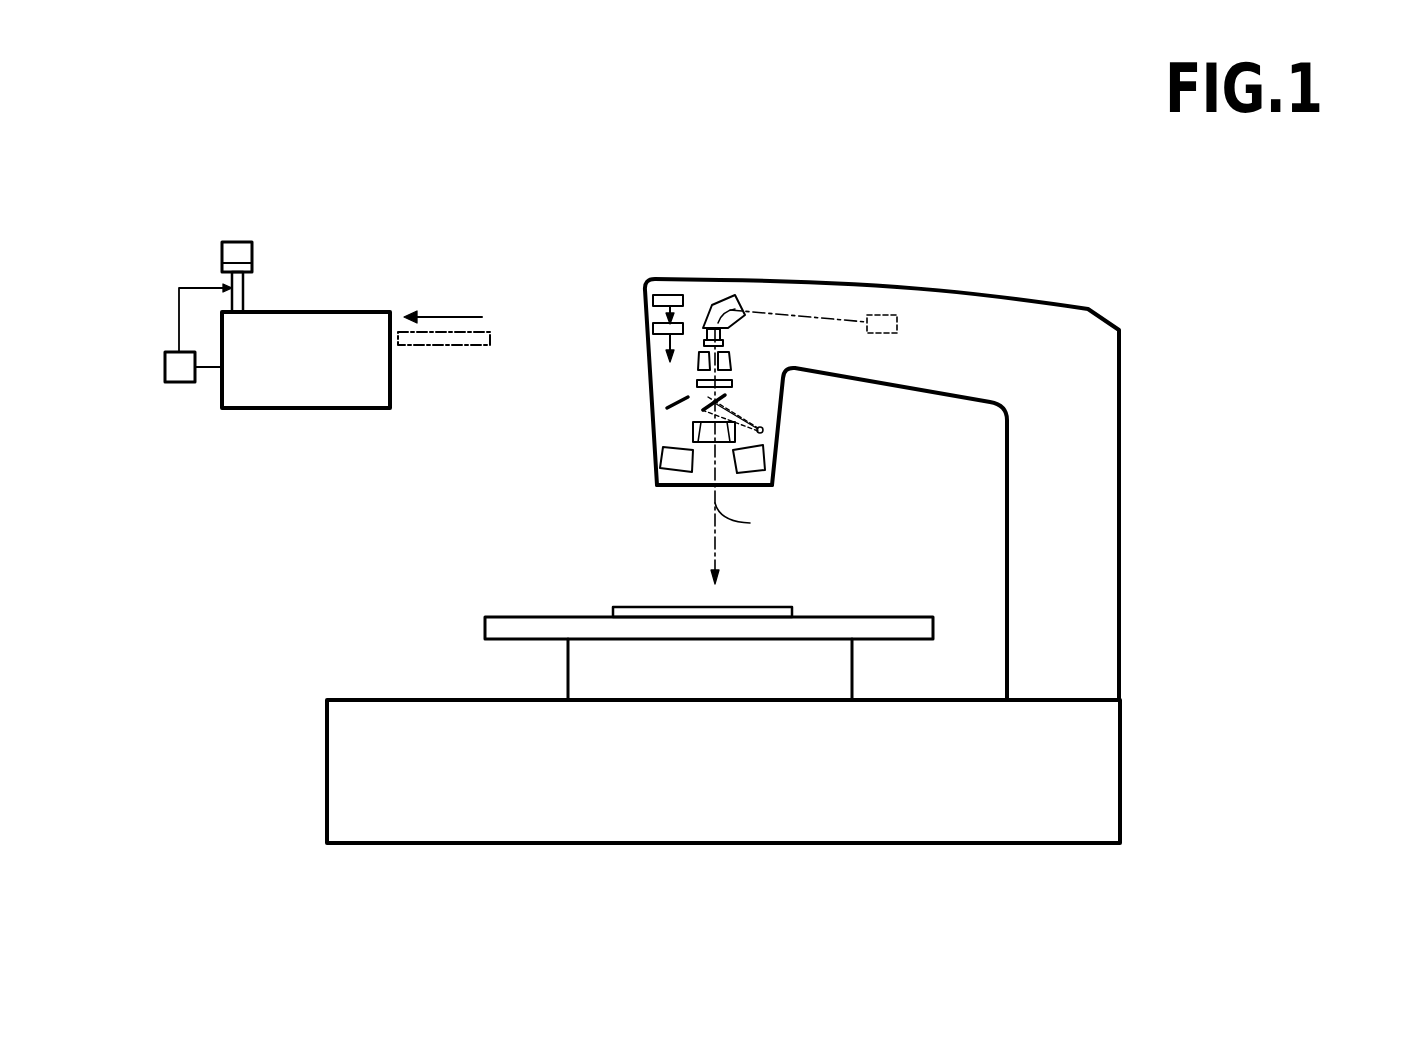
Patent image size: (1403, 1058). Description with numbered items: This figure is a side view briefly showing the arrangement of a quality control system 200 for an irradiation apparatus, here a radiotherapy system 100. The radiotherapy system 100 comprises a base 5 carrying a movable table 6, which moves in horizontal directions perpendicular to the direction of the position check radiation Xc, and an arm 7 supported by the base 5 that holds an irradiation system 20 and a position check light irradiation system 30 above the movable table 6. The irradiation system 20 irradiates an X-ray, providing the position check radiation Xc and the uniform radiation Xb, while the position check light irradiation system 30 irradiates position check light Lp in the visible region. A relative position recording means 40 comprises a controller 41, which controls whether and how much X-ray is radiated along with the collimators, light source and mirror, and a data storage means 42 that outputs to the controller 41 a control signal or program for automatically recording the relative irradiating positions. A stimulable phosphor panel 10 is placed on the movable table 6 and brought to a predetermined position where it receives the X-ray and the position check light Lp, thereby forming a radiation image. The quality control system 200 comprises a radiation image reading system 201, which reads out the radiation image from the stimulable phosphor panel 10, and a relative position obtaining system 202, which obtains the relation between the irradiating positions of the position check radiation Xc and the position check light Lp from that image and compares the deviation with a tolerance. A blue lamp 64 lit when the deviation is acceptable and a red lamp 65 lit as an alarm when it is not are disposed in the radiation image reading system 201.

The radiotherapy system 100 is at (997, 126).
The base 5 is at (1112, 728).
The movable table 6 is at (926, 626).
The arm 7 is at (1038, 317).
The stimulable phosphor panel 10 is at (775, 607).
The irradiation system 20 is at (720, 277).
The position check light irradiation system 30 is at (766, 409).
The relative position recording means 40 is at (574, 313).
The controller 41 is at (652, 327).
The data storage means 42 is at (652, 298).
The quality control system 200 is at (349, 204).
The radiation image reading system 201 is at (318, 410).
The relative position obtaining system 202 is at (178, 385).
The blue lamp 64 is at (245, 265).
The red lamp 65 is at (235, 247).